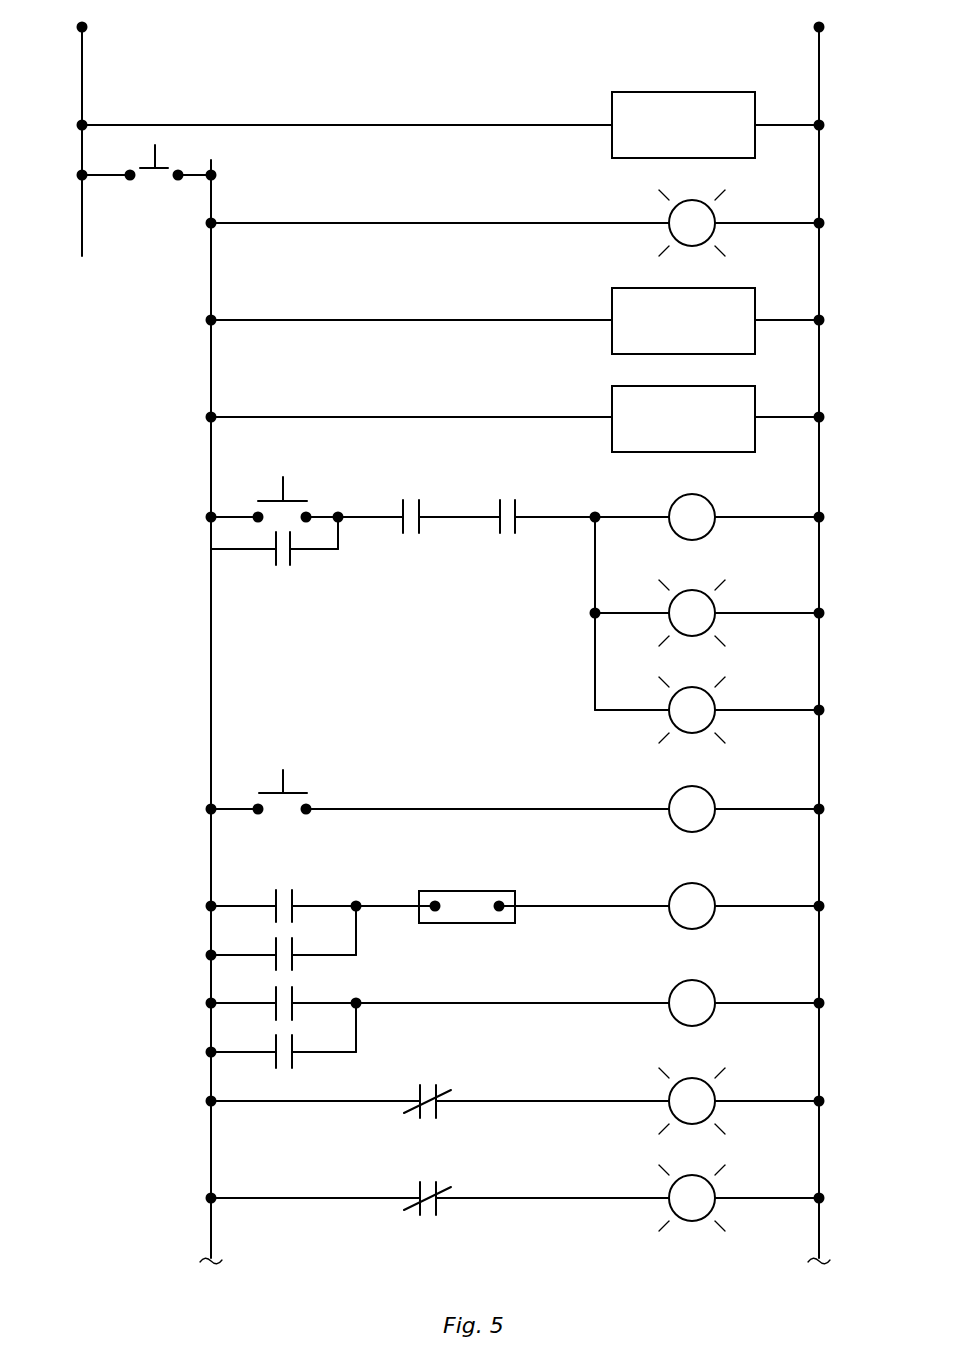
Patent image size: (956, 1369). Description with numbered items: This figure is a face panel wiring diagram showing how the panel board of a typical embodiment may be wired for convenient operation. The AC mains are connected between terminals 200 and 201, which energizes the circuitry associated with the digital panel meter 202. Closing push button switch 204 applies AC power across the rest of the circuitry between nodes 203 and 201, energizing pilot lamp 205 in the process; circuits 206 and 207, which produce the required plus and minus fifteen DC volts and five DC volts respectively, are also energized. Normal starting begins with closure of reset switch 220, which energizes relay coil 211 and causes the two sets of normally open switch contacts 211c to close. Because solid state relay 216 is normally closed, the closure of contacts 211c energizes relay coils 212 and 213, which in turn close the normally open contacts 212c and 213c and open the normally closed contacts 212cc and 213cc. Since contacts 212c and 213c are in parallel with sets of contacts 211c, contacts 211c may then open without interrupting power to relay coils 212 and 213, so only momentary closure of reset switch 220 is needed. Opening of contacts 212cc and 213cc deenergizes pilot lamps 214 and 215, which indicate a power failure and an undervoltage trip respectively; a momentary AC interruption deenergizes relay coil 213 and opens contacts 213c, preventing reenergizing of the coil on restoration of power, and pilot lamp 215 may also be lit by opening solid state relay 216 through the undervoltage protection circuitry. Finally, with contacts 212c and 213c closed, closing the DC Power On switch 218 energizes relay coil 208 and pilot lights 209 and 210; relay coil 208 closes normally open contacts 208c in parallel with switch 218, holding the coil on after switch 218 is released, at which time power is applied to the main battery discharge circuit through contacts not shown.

The terminal 200 is at (79, 128).
The terminal 201 is at (818, 632).
The digital panel meter 202 is at (653, 110).
The node 203 is at (208, 223).
The push button switch 204 is at (165, 168).
The pilot lamp 205 is at (692, 218).
The circuit 206 is at (732, 310).
The circuit 207 is at (733, 405).
The relay coil 208 is at (697, 512).
The normally open contacts 208c is at (292, 558).
The pilot light 209 is at (708, 607).
The pilot light 210 is at (703, 705).
The relay coil 211 is at (705, 806).
The normally open switch contacts 211c is at (292, 897).
The relay coil 212 is at (702, 902).
The normally open contacts 212c is at (423, 504).
The normally closed contacts 212cc is at (447, 1189).
The relay coil 213 is at (700, 998).
The normally open contacts 213c is at (518, 508).
The normally closed contacts 213cc is at (445, 1091).
The pilot lamp 214 is at (702, 1097).
The pilot lamp 215 is at (702, 1195).
The solid state relay 216 is at (473, 900).
The DC Power On switch 218 is at (297, 498).
The reset switch 220 is at (298, 792).